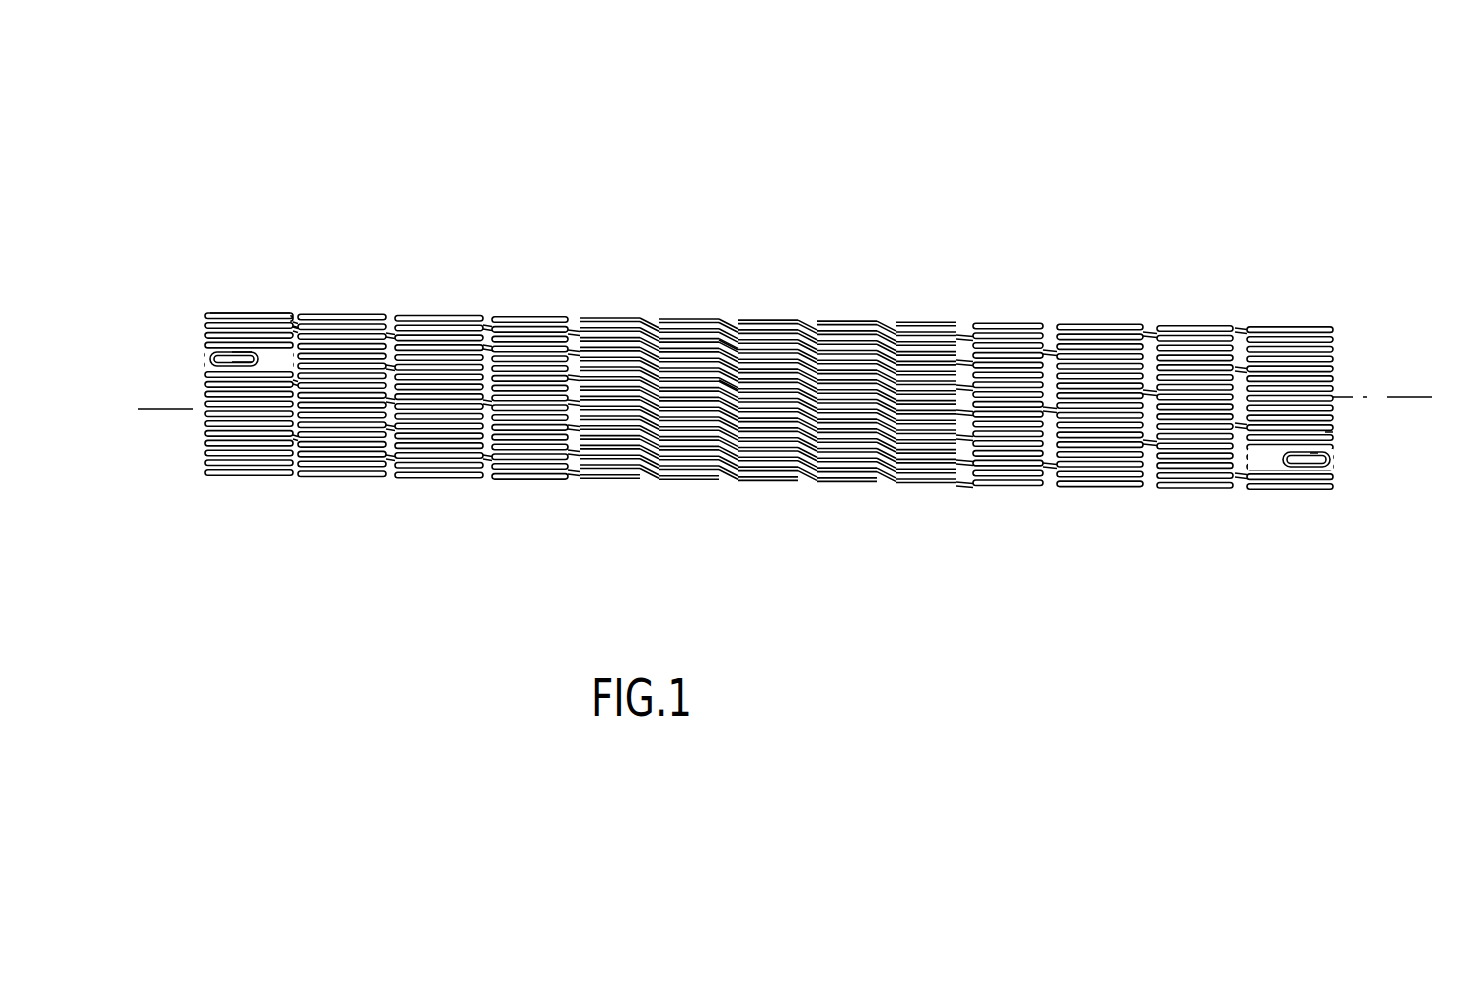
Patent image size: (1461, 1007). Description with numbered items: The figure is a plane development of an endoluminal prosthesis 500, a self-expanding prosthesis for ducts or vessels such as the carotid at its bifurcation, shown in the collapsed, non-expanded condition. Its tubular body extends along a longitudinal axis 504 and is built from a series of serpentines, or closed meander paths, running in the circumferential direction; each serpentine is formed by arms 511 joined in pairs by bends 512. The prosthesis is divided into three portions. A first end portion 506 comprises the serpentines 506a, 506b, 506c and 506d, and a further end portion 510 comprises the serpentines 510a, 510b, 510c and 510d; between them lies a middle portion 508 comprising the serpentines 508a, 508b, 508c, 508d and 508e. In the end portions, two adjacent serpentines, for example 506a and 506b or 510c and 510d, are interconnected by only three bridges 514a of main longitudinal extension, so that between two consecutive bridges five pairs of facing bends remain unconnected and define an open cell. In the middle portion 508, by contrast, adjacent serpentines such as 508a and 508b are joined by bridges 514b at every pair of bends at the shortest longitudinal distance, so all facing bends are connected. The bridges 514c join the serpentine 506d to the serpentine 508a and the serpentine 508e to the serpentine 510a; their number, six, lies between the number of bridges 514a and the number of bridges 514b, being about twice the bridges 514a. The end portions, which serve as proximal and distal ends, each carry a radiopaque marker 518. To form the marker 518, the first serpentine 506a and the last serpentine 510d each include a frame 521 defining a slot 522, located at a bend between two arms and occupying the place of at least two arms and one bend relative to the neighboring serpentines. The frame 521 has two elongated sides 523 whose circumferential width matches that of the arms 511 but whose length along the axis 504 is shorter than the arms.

The endoluminal prosthesis 500 is at (1020, 159).
The longitudinal axis 504 is at (165, 405).
The end portion 506 is at (558, 588).
The serpentine 506a is at (244, 482).
The serpentine 506b is at (343, 482).
The serpentine 506c is at (440, 482).
The serpentine 506d is at (520, 482).
The middle portion 508 is at (973, 552).
The serpentine 508a is at (617, 486).
The serpentine 508b is at (690, 486).
The serpentine 508c is at (770, 486).
The serpentine 508d is at (848, 486).
The serpentine 508e is at (938, 486).
The end portion 510 is at (1336, 290).
The serpentine 510a is at (1018, 495).
The serpentine 510b is at (1114, 495).
The serpentine 510c is at (1197, 500).
The serpentine 510d is at (1288, 500).
The arm 511 is at (250, 313).
The bend 512 is at (290, 320).
The bridge 514a is at (290, 322).
The bridge 514b is at (734, 322).
The bridge 514c is at (574, 318).
The marker 518 is at (210, 356).
The frame 521 is at (240, 357).
The slot 522 is at (233, 360).
The elongated side 523 is at (1333, 433).